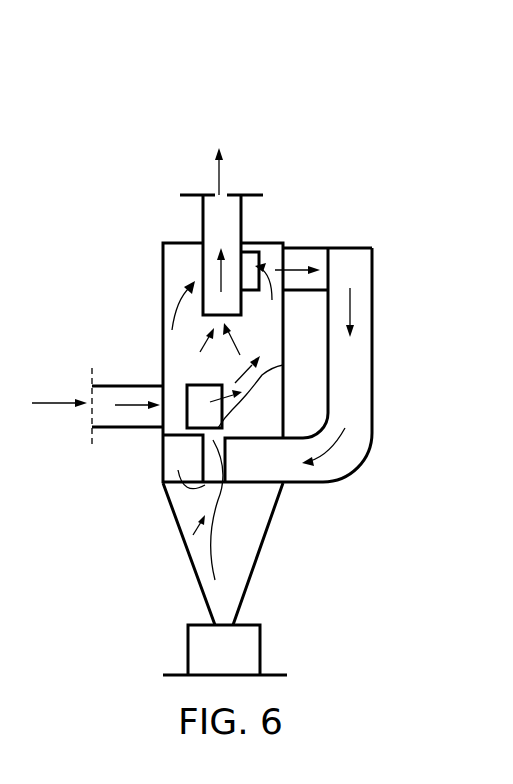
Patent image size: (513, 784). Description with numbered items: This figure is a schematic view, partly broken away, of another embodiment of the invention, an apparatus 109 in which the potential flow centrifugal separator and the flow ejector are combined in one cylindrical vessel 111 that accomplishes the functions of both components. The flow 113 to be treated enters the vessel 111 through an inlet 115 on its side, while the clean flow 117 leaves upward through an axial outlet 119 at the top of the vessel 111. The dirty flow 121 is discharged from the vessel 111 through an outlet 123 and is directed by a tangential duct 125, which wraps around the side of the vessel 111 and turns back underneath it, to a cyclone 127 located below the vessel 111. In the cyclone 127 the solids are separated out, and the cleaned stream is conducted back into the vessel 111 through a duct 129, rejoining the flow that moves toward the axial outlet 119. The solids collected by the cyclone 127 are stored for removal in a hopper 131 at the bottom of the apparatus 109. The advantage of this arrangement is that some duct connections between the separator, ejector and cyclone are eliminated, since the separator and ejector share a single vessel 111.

The apparatus 109 is at (134, 608).
The cylindrical vessel 111 is at (168, 338).
The flow to be treated 113 is at (62, 405).
The inlet 115 is at (125, 388).
The clean flow 117 is at (215, 170).
The axial outlet 119 is at (207, 217).
The dirty flow 121 is at (285, 268).
The outlet 123 is at (318, 250).
The tangential duct 125 is at (352, 360).
The cyclone 127 is at (247, 540).
The duct 129 is at (203, 440).
The hopper 131 is at (247, 655).